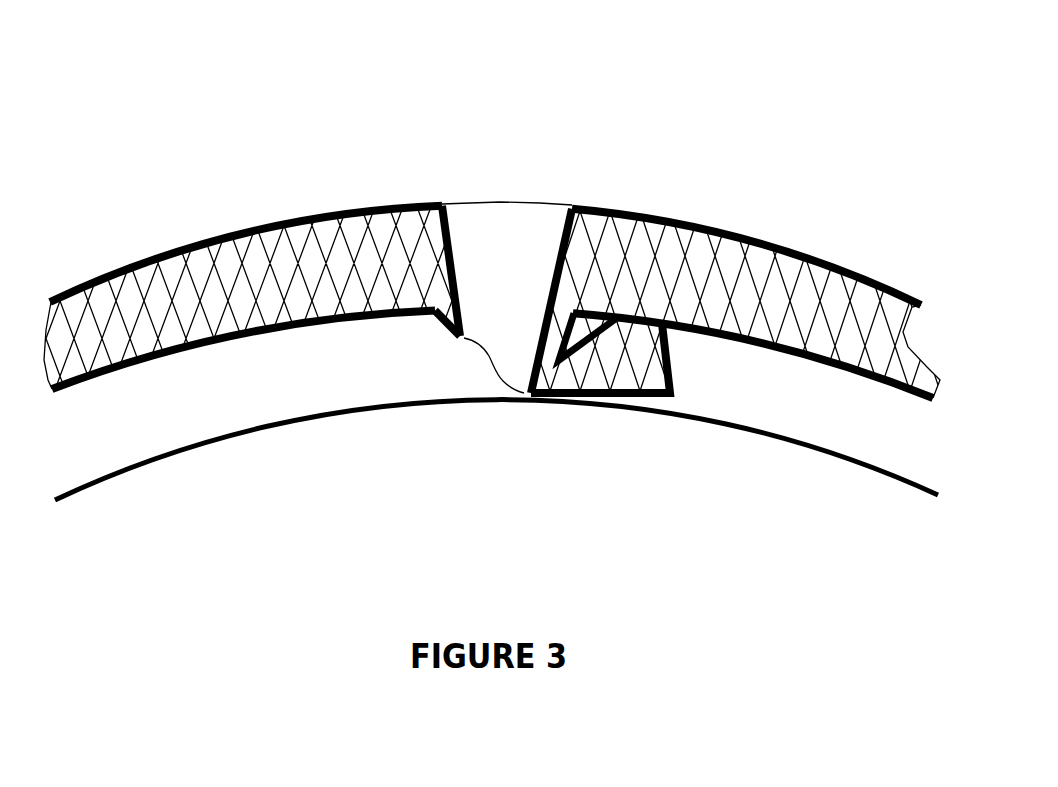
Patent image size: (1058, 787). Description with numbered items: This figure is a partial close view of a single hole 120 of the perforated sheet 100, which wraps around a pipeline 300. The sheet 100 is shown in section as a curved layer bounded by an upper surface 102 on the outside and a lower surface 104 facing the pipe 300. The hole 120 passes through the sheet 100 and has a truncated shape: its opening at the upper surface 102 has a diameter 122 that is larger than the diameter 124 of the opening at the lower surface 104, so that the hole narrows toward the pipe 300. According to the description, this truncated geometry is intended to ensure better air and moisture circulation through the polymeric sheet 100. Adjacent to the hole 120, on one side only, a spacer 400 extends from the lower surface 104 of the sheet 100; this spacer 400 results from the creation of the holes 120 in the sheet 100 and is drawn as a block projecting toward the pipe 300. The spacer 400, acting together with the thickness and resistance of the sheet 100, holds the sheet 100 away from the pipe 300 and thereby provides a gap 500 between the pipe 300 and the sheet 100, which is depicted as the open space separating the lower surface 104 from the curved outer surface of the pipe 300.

The perforated sheet 100 is at (661, 213).
The upper surface 102 is at (268, 222).
The lower surface 104 is at (290, 332).
The hole 120 is at (497, 190).
The diameter of the hole on the upper surface 122 is at (448, 200).
The diameter of the hole at the lower surface 124 is at (467, 338).
The pipeline 300 is at (873, 475).
The spacer 400 is at (672, 380).
The gap 500 is at (100, 432).